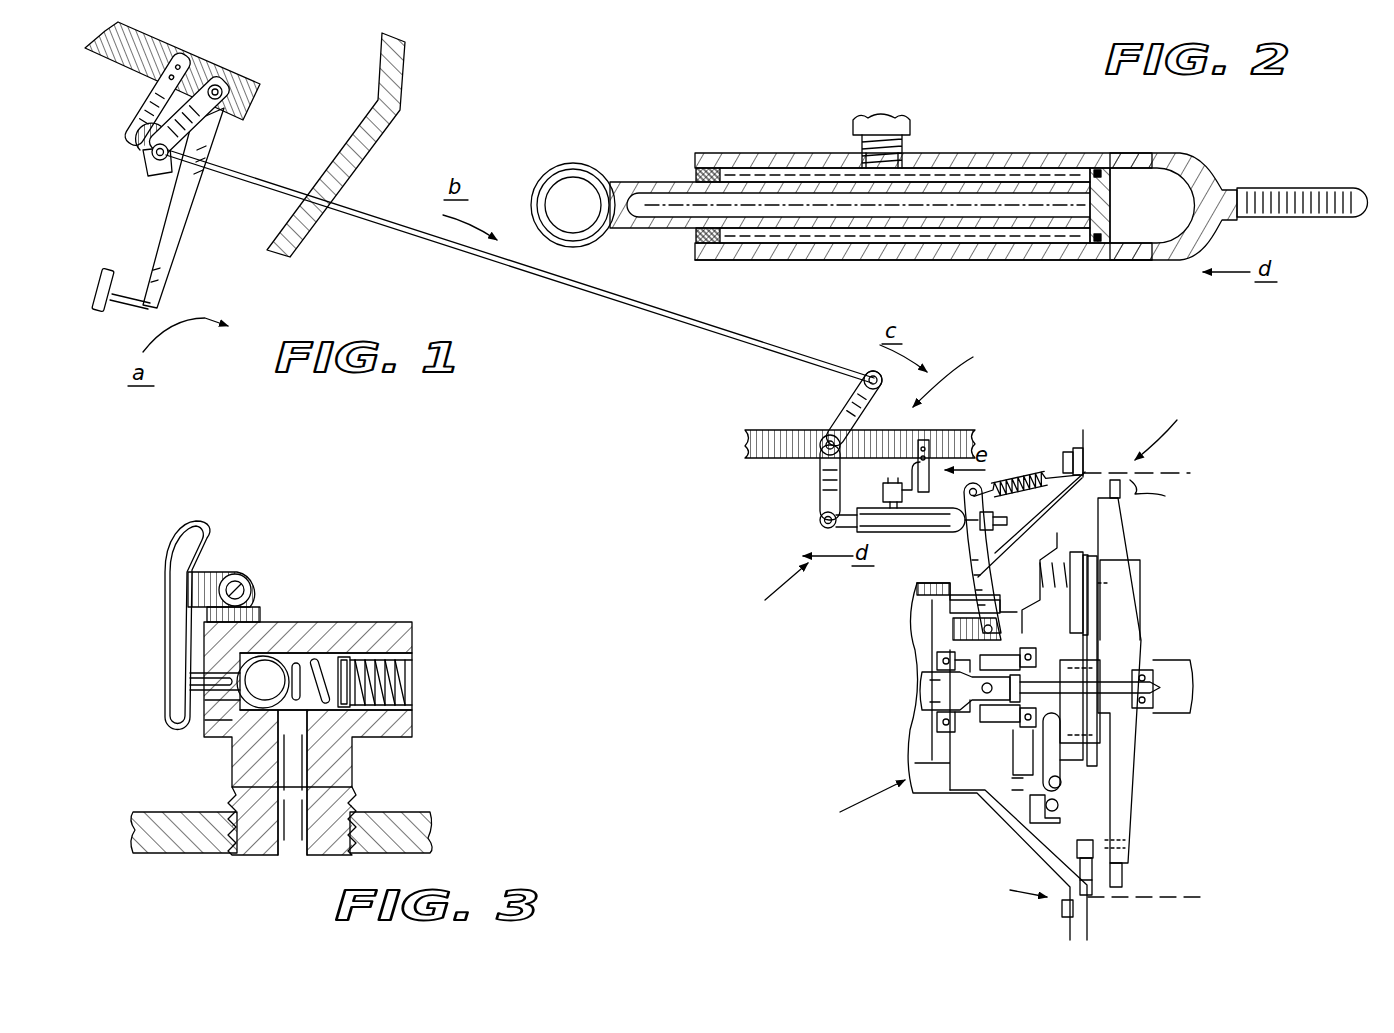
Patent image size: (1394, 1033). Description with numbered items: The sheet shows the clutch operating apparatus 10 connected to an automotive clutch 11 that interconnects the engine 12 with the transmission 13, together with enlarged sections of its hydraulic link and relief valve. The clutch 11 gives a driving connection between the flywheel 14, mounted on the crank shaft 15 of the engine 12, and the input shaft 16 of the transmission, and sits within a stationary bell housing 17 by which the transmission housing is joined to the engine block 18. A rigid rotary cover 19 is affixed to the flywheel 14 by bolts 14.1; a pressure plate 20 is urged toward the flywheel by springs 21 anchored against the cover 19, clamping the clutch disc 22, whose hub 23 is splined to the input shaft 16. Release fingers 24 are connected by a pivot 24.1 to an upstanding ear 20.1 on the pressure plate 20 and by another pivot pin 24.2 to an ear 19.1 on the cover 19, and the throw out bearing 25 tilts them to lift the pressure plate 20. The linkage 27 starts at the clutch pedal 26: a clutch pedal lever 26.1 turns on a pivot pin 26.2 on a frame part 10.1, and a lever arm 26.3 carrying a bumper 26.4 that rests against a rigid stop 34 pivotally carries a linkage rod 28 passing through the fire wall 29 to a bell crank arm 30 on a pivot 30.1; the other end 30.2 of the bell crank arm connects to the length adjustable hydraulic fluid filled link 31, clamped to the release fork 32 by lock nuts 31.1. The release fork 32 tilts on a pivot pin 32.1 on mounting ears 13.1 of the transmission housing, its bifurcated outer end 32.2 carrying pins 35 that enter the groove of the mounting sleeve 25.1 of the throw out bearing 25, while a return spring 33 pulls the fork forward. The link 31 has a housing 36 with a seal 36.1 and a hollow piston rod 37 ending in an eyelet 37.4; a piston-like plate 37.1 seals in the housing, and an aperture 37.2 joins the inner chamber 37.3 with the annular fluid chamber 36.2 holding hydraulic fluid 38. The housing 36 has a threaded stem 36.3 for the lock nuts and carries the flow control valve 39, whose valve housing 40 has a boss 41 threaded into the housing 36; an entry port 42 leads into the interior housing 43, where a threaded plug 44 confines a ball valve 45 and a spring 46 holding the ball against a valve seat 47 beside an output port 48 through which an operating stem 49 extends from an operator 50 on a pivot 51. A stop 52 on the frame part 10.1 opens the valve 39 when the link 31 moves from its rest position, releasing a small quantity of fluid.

In FIG. 1, the clutch operating apparatus 10 is at (955, 375).
In FIG. 1, the frame part 10.1 is at (265, 100).
In FIG. 1, the automotive clutch 11 is at (1040, 907).
In FIG. 1, the engine 12 is at (1168, 447).
In FIG. 1, the transmission 13 is at (879, 761).
In FIG. 1, the mounting ears 13.1 is at (945, 630).
In FIG. 1, the flywheel 14 is at (1123, 574).
In FIG. 1, the bolts 14.1 is at (1080, 856).
In FIG. 1, the crank shaft 15 is at (1197, 668).
In FIG. 1, the input shaft 16 is at (1063, 667).
In FIG. 1, the bell housing 17 is at (1016, 903).
In FIG. 1, the engine block 18 is at (1150, 897).
In FIG. 1, the rotary cover 19 is at (1023, 803).
In FIG. 1, the ear 19.1 is at (1043, 803).
In FIG. 1, the pressure plate 20 is at (1115, 523).
In FIG. 1, the upstanding ear 20.1 is at (1080, 798).
In FIG. 1, the springs 21 is at (1057, 557).
In FIG. 1, the clutch disc 22 is at (1097, 565).
In FIG. 1, the hub 23 is at (1090, 638).
In FIG. 1, the release fingers 24 is at (1057, 748).
In FIG. 1, the pivot 24.1 is at (1052, 813).
In FIG. 1, the pivot pin 24.2 is at (1062, 778).
In FIG. 1, the throw out bearing 25 is at (1035, 650).
In FIG. 1, the mounting sleeve 25.1 is at (1018, 660).
In FIG. 1, the clutch pedal 26 is at (95, 287).
In FIG. 1, the clutch pedal lever 26.1 is at (165, 262).
In FIG. 1, the pivot pin 26.2 is at (226, 86).
In FIG. 1, the lever arm 26.3 is at (200, 133).
In FIG. 1, the bumper 26.4 is at (150, 153).
In FIG. 1, the linkage 27 is at (770, 596).
In FIG. 1, the linkage rod 28 is at (268, 197).
In FIG. 1, the fire wall 29 is at (392, 135).
In FIG. 1, the bell crank arm 30 is at (862, 379).
In FIG. 1, the pivot 30.1 is at (820, 438).
In FIG. 1, the other end of bell crank arm 30.2 is at (820, 468).
In FIG. 1, the length adjustable hydraulic fluid filled link 31 is at (848, 531).
In FIG. 2, the length adjustable hydraulic fluid filled link 31 is at (1022, 260).
In FIG. 1, the lock nuts 31.1 is at (995, 508).
In FIG. 1, the release fork 32 is at (970, 572).
In FIG. 1, the pivot pin 32.1 is at (970, 613).
In FIG. 1, the bifurcated outer end 32.2 is at (975, 732).
In FIG. 1, the return spring 33 is at (1028, 482).
In FIG. 1, the rigid stop 34 is at (143, 112).
In FIG. 1, the pivot pin 35 is at (922, 688).
In FIG. 1, the housing 36 is at (927, 520).
In FIG. 2, the housing 36 is at (1057, 157).
In FIG. 3, the housing 36 is at (400, 830).
In FIG. 2, the seal 36.1 is at (708, 175).
In FIG. 2, the annular fluid chamber 36.2 is at (943, 173).
In FIG. 2, the threaded stem 36.3 is at (1317, 217).
In FIG. 1, the hollow piston rod 37 is at (848, 518).
In FIG. 2, the hollow piston rod 37 is at (788, 180).
In FIG. 2, the piston-like plate 37.1 is at (1113, 217).
In FIG. 2, the aperture 37.2 is at (1067, 180).
In FIG. 2, the inner chamber 37.3 is at (690, 210).
In FIG. 2, the eyelet 37.4 is at (578, 167).
In FIG. 2, the hydraulic fluid 38 is at (823, 175).
In FIG. 1, the hydraulic fluid flow control valve 39 is at (883, 490).
In FIG. 2, the hydraulic fluid flow control valve 39 is at (907, 120).
In FIG. 3, the hydraulic fluid flow control valve 39 is at (367, 625).
In FIG. 3, the valve housing 40 is at (403, 634).
In FIG. 3, the mounting stem or boss 41 is at (247, 767).
In FIG. 3, the entry port 42 is at (293, 840).
In FIG. 3, the interior housing 43 is at (310, 653).
In FIG. 3, the threaded plug 44 is at (363, 663).
In FIG. 3, the ball valve 45 is at (263, 663).
In FIG. 3, the spring 46 is at (370, 622).
In FIG. 3, the valve seat 47 is at (217, 728).
In FIG. 3, the output port 48 is at (253, 690).
In FIG. 3, the operating stem 49 is at (197, 680).
In FIG. 3, the lever arm or operator 50 is at (172, 593).
In FIG. 3, the pivot 51 is at (237, 582).
In FIG. 1, the stop 52 is at (928, 462).